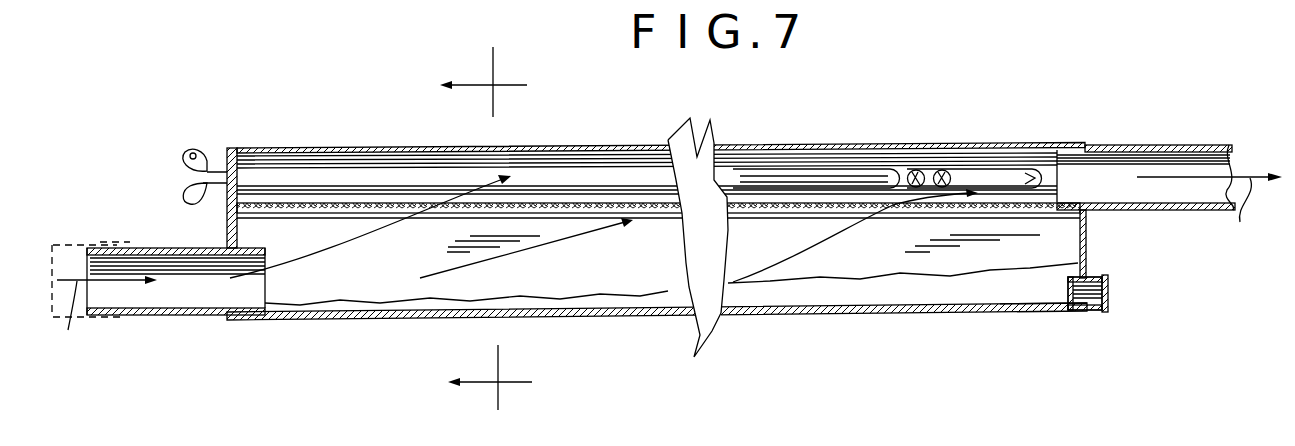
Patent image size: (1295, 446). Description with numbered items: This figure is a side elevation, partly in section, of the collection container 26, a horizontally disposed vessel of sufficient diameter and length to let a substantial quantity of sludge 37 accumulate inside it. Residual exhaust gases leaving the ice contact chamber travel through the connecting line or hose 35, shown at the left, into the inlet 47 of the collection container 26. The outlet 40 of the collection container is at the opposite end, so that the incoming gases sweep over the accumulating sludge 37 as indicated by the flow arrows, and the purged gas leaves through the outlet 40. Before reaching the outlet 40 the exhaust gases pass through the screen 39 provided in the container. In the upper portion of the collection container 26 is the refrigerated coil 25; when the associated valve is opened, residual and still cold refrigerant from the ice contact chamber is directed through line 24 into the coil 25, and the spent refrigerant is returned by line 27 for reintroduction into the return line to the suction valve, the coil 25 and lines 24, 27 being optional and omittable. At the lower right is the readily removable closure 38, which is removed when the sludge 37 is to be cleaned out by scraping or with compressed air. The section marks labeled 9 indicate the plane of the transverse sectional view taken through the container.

The section line 9- 9 is at (472, 228).
The line 24 is at (187, 190).
The refrigerated coil 25 is at (784, 160).
The collection container 26 is at (888, 322).
The line 27 is at (200, 167).
The connecting line or hose 35 is at (70, 243).
The sludge 37 is at (1037, 283).
The readily removable closure 38 is at (1107, 297).
The screen 39 is at (807, 214).
The outlet 40 is at (1170, 163).
The inlet 47 is at (263, 284).